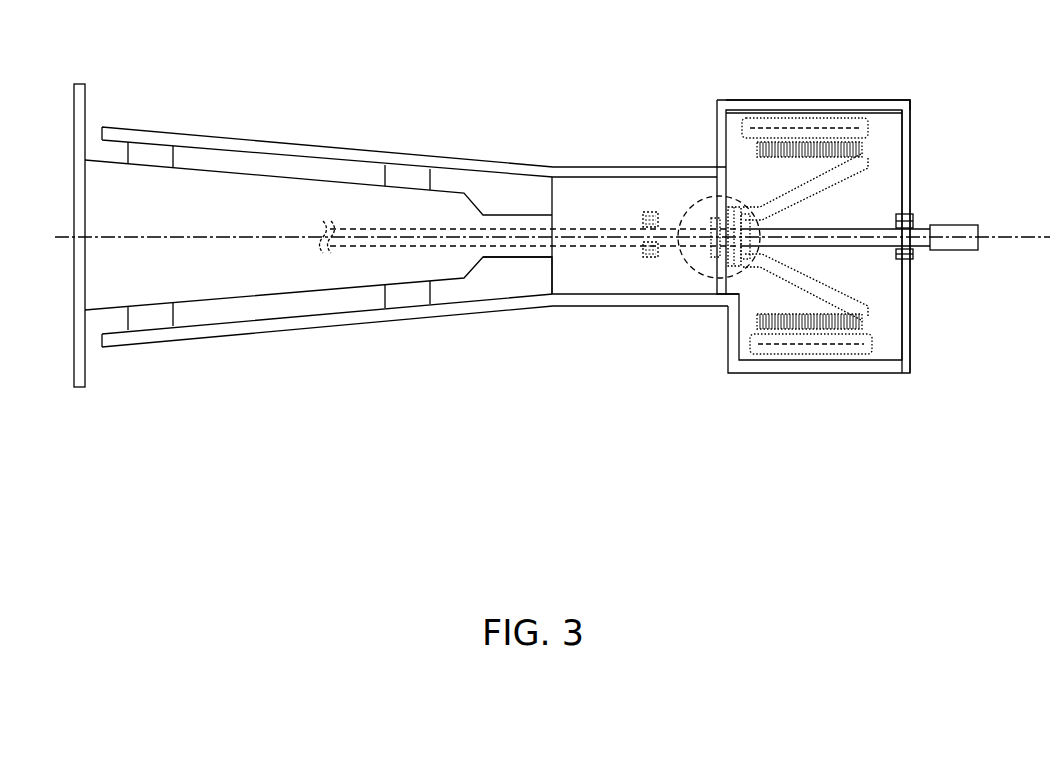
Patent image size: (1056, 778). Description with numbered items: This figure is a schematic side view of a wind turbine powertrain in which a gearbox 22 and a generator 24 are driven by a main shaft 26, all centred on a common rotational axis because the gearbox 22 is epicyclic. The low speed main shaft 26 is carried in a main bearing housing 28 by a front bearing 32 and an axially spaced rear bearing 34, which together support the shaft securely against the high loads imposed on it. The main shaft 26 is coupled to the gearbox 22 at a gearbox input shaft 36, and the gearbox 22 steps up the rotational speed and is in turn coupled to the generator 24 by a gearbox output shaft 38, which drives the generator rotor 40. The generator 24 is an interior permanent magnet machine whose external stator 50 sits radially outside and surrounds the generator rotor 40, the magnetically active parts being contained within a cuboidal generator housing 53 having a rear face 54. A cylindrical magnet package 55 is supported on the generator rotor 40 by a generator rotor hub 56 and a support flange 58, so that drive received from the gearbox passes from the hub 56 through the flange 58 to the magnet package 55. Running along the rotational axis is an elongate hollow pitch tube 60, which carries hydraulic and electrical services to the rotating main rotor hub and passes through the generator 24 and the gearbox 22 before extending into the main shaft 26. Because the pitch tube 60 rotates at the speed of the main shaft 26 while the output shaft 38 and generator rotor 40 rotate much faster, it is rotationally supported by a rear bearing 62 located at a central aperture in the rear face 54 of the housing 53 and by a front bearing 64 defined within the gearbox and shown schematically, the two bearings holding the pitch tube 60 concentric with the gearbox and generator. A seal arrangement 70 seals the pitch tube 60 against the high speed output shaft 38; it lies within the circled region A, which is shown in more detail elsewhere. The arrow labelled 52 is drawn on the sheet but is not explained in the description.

The gearbox 22 is at (573, 187).
The generator 24 is at (880, 390).
The main shaft 26 is at (286, 188).
The main bearing housing 28 is at (217, 143).
The front bearing 32 is at (142, 158).
The rear bearing 34 is at (398, 172).
The gearbox input shaft 36 is at (539, 255).
The gearbox output shaft 38 is at (730, 222).
The generator rotor 40 is at (770, 278).
The external stator 50 is at (808, 358).
The motor assembly 52 is at (708, 573).
The generator housing 53 is at (887, 110).
The rear face 54 is at (910, 135).
The cylindrical magnet package 55 is at (773, 327).
The generator rotor hub 56 is at (740, 213).
The support flange 58 is at (805, 192).
The pitch tube 60 is at (872, 247).
The rear bearing 62 is at (910, 257).
The front bearing 64 is at (647, 258).
The seal arrangement 70 is at (711, 266).
The circled region A is at (705, 272).